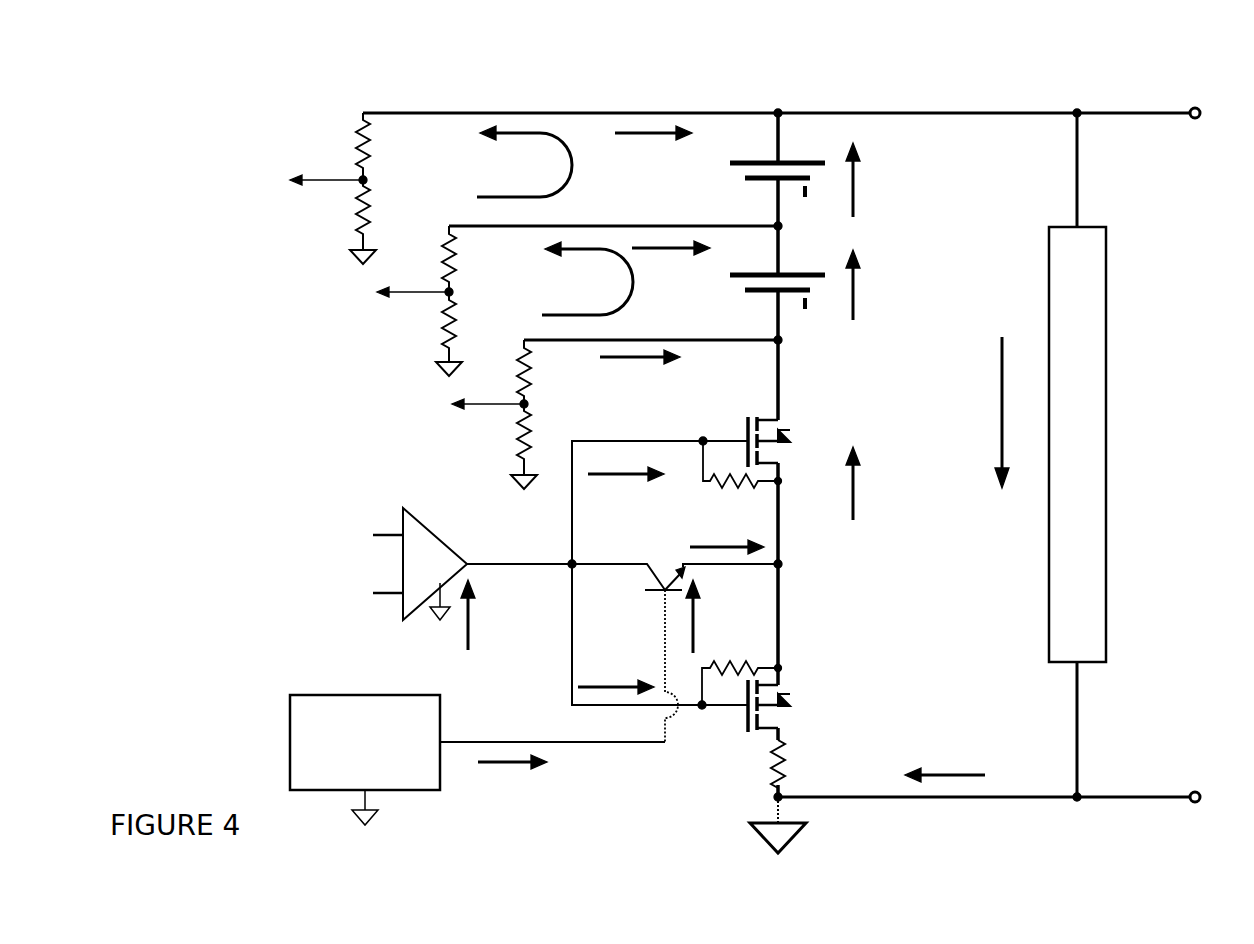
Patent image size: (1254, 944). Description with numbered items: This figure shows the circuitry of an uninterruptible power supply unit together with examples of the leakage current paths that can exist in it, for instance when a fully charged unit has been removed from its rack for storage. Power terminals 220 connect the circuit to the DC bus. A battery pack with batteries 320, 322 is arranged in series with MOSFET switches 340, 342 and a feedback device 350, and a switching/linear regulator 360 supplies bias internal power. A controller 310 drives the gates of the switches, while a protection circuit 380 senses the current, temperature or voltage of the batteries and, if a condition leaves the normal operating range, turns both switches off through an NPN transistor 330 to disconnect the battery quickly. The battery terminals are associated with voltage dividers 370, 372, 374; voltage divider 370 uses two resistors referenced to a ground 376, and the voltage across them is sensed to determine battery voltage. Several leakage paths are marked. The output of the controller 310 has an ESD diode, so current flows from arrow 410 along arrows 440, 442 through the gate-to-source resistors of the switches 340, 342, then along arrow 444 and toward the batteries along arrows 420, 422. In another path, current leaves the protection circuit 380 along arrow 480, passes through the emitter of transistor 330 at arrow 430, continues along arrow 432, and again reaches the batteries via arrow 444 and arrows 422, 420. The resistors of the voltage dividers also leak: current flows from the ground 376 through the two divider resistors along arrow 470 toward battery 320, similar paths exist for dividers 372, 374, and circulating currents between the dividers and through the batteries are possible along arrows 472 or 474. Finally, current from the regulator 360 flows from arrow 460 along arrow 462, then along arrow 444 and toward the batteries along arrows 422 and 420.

The power terminals 220 is at (1196, 120).
The controller 310 is at (403, 532).
The battery 320 is at (752, 170).
The battery 322 is at (752, 282).
The transistor 330 is at (647, 572).
The switch 340 is at (793, 440).
The switch 342 is at (793, 696).
The feedback device 350 is at (784, 764).
The switching/linear regulator 360 is at (1106, 560).
The voltage divider 370 is at (258, 108).
The voltage divider 372 is at (330, 228).
The voltage divider 374 is at (418, 333).
The ground 376 is at (383, 243).
The protection circuit 380 is at (290, 746).
The arrow 410 is at (471, 636).
The arrow 420 is at (858, 206).
The arrow 422 is at (858, 306).
The arrow 430 is at (700, 622).
The arrow 432 is at (768, 553).
The arrow 440 is at (632, 470).
The arrow 442 is at (577, 690).
The arrow 444 is at (858, 501).
The arrow 460 is at (1000, 351).
The arrow 462 is at (938, 783).
The arrow 470 is at (635, 126).
The arrow 472 is at (553, 196).
The arrow 474 is at (602, 315).
The arrow 480 is at (548, 766).